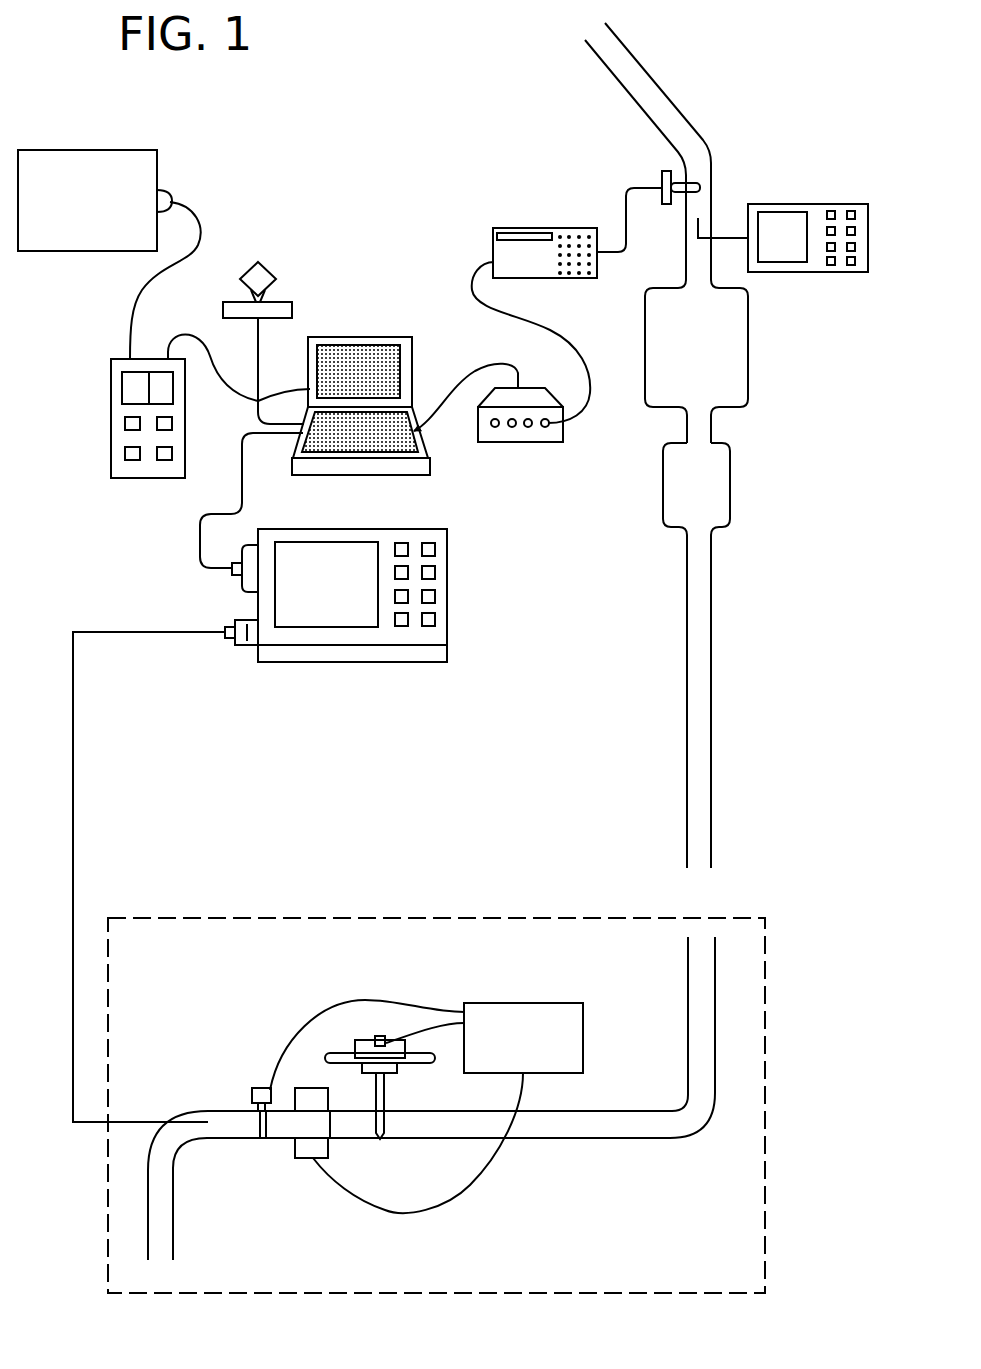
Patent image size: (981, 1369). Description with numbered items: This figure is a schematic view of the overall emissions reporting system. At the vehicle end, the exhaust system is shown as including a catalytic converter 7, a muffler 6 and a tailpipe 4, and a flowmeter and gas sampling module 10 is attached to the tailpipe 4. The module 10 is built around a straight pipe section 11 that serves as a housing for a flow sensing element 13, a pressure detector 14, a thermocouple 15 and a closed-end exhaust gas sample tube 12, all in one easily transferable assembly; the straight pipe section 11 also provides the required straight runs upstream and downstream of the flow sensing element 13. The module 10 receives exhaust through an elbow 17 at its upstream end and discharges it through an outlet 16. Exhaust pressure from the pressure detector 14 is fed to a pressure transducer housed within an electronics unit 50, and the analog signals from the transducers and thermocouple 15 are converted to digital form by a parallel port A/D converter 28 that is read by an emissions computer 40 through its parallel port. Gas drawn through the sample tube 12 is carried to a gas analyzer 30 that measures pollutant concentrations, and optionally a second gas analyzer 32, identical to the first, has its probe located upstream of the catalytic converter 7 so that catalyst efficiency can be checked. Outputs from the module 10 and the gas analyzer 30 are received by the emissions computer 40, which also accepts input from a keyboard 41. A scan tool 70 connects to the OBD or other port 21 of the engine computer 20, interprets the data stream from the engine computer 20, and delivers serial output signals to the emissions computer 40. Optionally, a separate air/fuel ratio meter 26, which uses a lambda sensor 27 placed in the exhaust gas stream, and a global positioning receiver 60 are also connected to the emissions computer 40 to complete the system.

The tailpipe 4 is at (697, 686).
The muffler 6 is at (710, 498).
The catalytic converter 7 is at (710, 361).
The flowmeter and gas sampling module 10 is at (283, 1294).
The straight pipe section 11 is at (607, 1110).
The closed-end exhaust gas sample tube 12 is at (132, 1120).
The flow sensing element 13 is at (362, 1040).
The pressure detector 14 is at (307, 1160).
The thermocouple 15 is at (252, 1095).
The outlet 16 is at (162, 1157).
The elbow 17 is at (688, 1118).
The engine computer 20 is at (95, 200).
The OBD or other port 21 is at (168, 192).
The air/fuel ratio meter 26 is at (497, 228).
The lambda sensor 27 is at (694, 168).
The parallel port A/D converter 28 is at (553, 443).
The gas analyzer 30 is at (258, 663).
The second gas analyzer 32 is at (773, 203).
The emissions computer 40 is at (406, 336).
The keyboard 41 is at (251, 512).
The electronics unit 50 is at (523, 1038).
The global positioning receiver 60 is at (288, 302).
The scan tool 70 is at (111, 409).